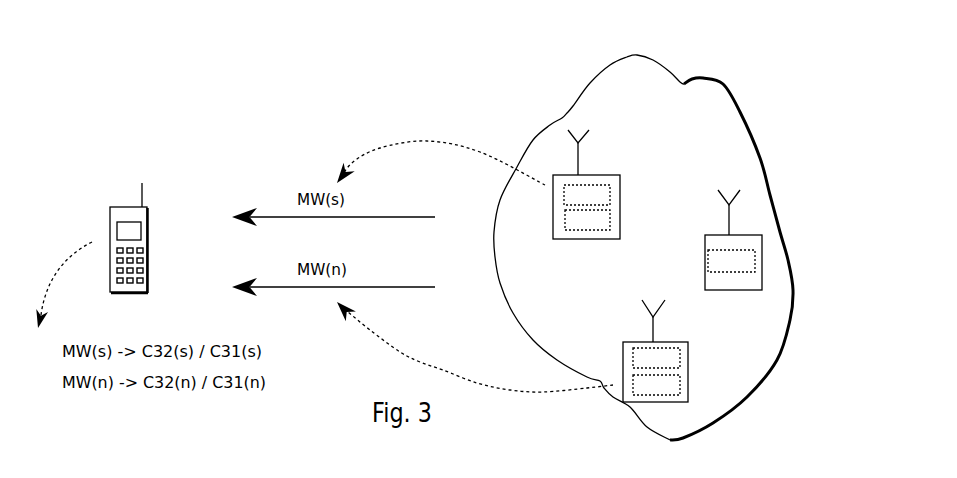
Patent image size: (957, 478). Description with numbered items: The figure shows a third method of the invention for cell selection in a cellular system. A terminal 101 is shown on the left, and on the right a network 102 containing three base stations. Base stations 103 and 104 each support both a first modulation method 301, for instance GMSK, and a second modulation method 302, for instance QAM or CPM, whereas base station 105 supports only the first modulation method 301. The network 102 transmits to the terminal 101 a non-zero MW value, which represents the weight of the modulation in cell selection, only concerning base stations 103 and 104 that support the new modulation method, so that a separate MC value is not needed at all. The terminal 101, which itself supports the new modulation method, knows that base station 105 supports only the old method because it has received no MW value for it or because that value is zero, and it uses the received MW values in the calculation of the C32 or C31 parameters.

The terminal 101 is at (117, 212).
The network 102 is at (708, 94).
The base station 103 is at (562, 167).
The base station 104 is at (688, 378).
The base station 105 is at (751, 235).
The first modulation method 301 is at (587, 195).
The second modulation method 302 is at (587, 220).